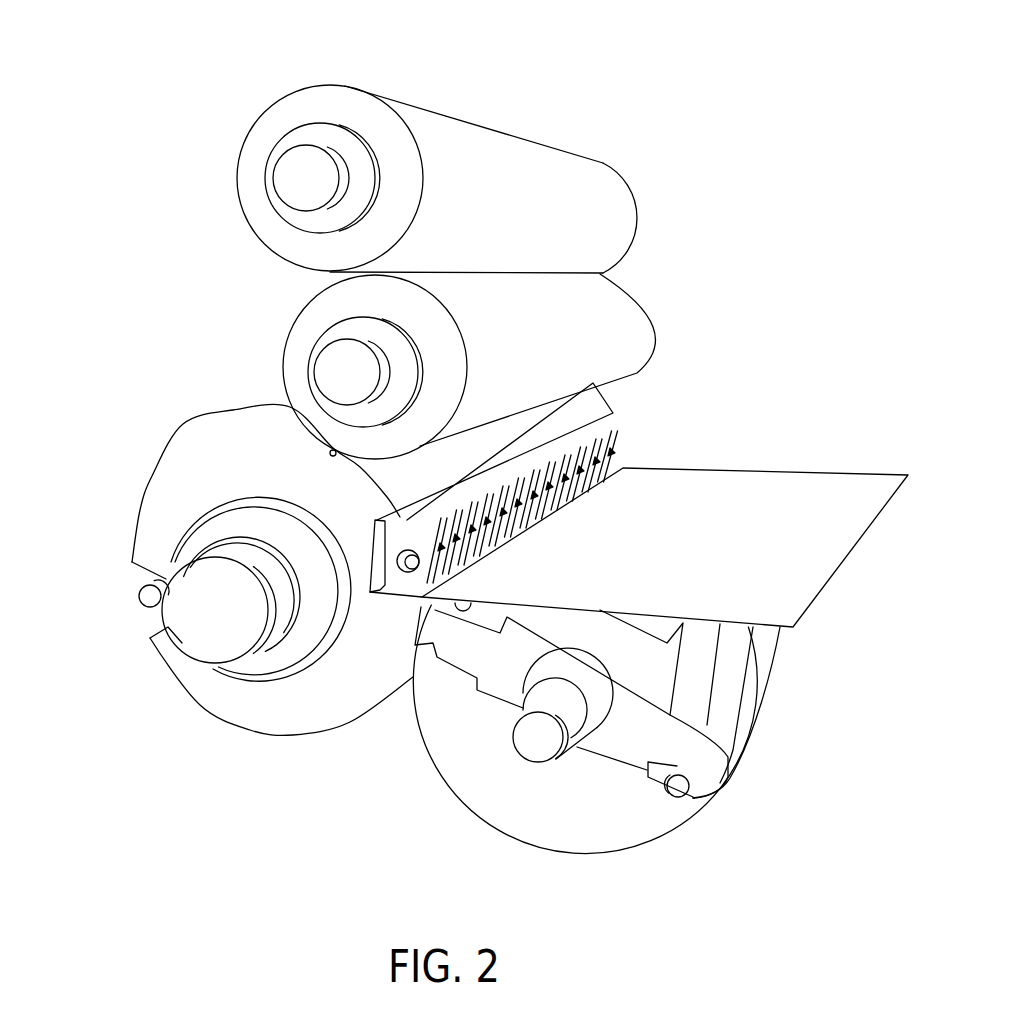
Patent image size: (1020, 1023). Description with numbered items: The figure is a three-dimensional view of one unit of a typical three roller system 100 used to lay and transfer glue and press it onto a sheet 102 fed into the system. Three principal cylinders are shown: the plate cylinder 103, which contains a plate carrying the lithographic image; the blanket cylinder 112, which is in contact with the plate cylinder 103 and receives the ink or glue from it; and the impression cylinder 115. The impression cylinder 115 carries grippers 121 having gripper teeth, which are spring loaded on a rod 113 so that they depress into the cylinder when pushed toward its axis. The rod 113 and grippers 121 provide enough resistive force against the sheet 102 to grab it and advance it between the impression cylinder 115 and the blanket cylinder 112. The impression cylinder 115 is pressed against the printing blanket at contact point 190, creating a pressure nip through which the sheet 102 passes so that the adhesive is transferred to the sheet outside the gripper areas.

The three roller system 100 is at (243, 21).
The plate cylinder 103 is at (374, 88).
The blanket cylinder 112 is at (623, 313).
The contact point 190 is at (327, 453).
The grippers 121 is at (622, 442).
The sheet 102 is at (802, 505).
The impression cylinder 115 is at (216, 704).
The rod 113 is at (405, 566).